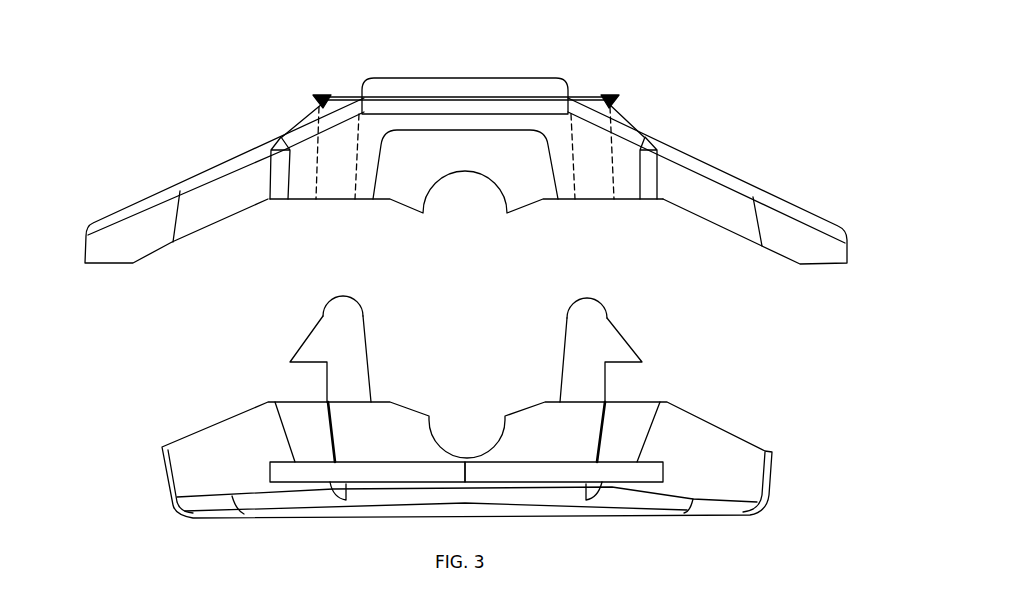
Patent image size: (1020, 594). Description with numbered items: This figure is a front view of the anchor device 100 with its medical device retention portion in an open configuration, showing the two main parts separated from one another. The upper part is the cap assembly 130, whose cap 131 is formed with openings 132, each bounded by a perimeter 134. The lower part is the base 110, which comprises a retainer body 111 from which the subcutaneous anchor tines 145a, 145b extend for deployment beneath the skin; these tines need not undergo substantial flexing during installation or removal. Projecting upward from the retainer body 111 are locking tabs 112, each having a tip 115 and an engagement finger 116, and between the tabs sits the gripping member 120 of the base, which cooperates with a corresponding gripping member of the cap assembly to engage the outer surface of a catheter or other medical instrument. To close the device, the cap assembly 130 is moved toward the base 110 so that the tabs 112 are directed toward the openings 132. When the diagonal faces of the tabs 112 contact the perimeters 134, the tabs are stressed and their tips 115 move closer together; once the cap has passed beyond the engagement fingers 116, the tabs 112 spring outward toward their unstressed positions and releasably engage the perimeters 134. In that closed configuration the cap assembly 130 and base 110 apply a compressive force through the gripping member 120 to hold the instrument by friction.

The anchor device 100 is at (128, 48).
The cap assembly 130 is at (792, 68).
The cap 131 is at (713, 203).
The openings 132 is at (343, 80).
The perimeters 134 is at (314, 98).
The base 110 is at (142, 501).
The retainer body 111 is at (222, 465).
The locking tabs 112 is at (340, 352).
The tips 115 is at (345, 284).
The engagement fingers 116 is at (466, 314).
The gripping member 120 is at (378, 433).
The subcutaneous anchor tine 145a is at (556, 480).
The subcutaneous anchor tine 145b is at (382, 480).